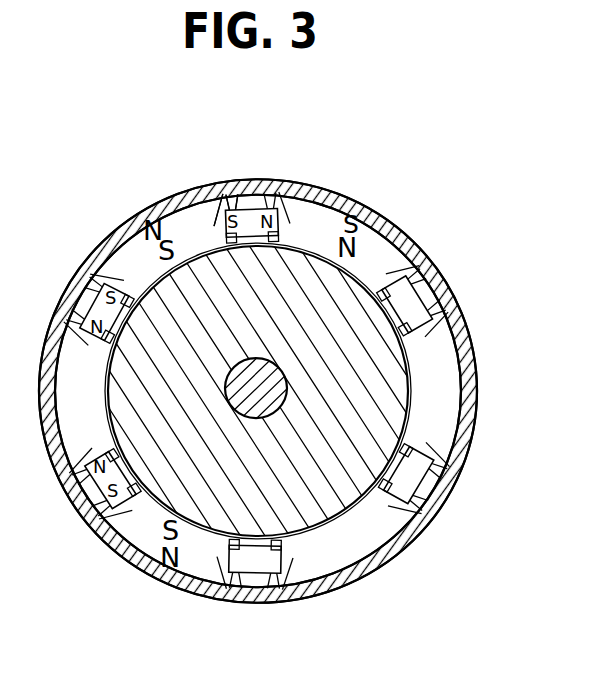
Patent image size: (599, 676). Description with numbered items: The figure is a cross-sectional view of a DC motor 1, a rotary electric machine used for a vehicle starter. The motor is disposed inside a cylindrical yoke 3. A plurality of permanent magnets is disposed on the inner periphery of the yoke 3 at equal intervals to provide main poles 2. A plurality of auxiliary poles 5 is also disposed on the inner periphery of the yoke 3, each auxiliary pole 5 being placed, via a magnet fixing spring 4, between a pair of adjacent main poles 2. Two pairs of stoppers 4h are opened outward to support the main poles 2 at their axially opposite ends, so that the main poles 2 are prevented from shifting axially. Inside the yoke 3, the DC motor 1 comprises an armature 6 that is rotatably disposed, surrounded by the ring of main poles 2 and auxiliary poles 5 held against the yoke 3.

The DC motor 1 is at (355, 174).
The main poles 2 is at (377, 243).
The yoke 3 is at (470, 345).
The magnet fixing spring 4 is at (248, 188).
The stoppers 4h is at (215, 232).
The auxiliary poles 5 is at (410, 300).
The armature 6 is at (326, 532).